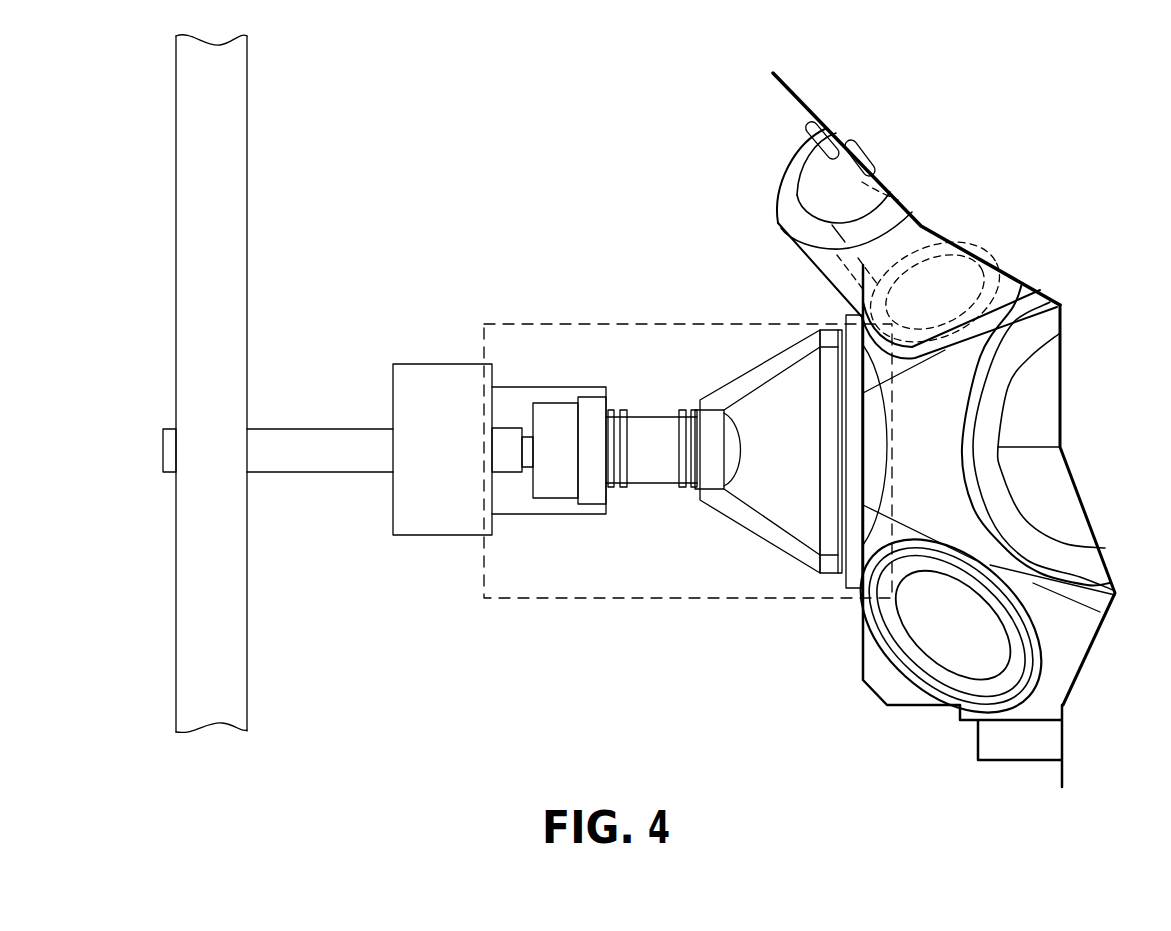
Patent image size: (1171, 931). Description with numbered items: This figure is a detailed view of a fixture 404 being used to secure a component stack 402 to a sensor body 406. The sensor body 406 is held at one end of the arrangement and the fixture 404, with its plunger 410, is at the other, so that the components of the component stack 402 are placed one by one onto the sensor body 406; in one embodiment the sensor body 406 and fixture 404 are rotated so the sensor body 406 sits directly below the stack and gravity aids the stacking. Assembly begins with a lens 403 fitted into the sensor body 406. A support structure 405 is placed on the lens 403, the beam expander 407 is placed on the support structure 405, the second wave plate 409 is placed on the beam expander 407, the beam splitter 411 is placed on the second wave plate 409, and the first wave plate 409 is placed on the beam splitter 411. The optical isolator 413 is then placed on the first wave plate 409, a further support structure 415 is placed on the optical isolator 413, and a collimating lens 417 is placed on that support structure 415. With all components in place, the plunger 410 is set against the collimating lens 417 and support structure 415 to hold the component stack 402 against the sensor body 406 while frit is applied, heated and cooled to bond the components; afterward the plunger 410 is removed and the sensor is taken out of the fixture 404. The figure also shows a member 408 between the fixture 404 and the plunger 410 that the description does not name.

The component stack 402 is at (520, 322).
The lens 403 is at (847, 578).
The fixture 404 is at (247, 136).
The support structure 405 is at (741, 525).
The sensor body 406 is at (1033, 350).
The beam expander 407 is at (740, 452).
The shaft 408 is at (273, 429).
The wave plate 409 is at (682, 410).
The plunger 410 is at (442, 364).
The beam splitter 411 is at (642, 483).
The optical isolator 413 is at (592, 504).
The support structure 415 is at (567, 514).
The collimating lens 417 is at (502, 428).